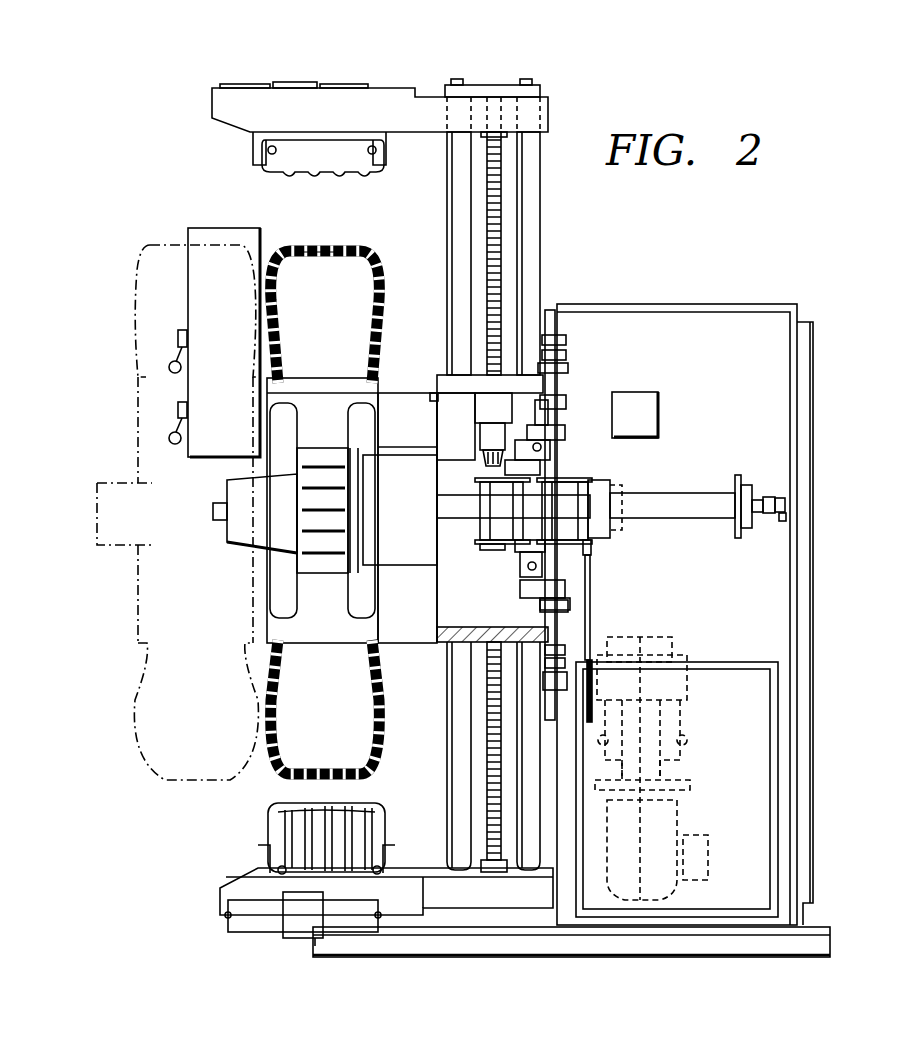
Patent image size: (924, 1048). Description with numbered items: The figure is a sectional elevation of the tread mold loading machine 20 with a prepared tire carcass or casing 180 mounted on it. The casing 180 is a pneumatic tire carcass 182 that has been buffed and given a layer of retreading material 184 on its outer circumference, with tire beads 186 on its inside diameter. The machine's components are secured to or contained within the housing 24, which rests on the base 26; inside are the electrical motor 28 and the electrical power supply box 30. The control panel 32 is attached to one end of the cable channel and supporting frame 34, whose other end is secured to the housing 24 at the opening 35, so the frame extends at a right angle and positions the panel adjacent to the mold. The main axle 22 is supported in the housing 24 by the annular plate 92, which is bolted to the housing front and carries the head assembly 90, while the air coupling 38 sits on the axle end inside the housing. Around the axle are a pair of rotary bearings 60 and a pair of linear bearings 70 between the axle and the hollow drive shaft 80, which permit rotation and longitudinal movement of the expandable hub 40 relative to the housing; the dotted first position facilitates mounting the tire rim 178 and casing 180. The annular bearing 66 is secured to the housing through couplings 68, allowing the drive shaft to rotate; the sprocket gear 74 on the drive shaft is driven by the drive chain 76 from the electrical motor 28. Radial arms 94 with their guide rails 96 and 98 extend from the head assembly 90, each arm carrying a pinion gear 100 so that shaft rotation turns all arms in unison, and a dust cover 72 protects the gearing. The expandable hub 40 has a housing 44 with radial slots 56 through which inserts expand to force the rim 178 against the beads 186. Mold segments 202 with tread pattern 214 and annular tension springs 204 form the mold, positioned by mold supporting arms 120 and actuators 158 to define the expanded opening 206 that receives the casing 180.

The tread mold loading machine 20 is at (590, 482).
The main axle 22 is at (695, 493).
The housing 24 is at (707, 302).
The base 26 is at (830, 940).
The electrical motor 28 is at (676, 820).
The electrical power supply box 30 is at (728, 662).
The control panel 32 is at (188, 236).
The cable channel and supporting frame 34 is at (400, 393).
The opening 35 is at (659, 405).
The air coupling 38 is at (775, 497).
The expandable hub 40 is at (112, 545).
The housing of expandable hub 44 is at (226, 492).
The radial slots 56 is at (325, 470).
The rotary bearings 60 is at (510, 545).
The annular bearing 66 is at (528, 582).
The couplings 68 is at (568, 395).
The linear bearings 70 is at (487, 550).
The dust cover 72 is at (455, 443).
The sprocket gear 74 is at (592, 548).
The drive chain 76 is at (590, 580).
The hollow drive shaft 80 is at (530, 470).
The head assembly 90 is at (440, 643).
The annular plate 92 is at (551, 318).
The radial arms 94 is at (510, 160).
The guide rail 96 is at (447, 205).
The guide rail 98 is at (539, 222).
The pinion gears 100 is at (445, 505).
The mold supporting arms 120 is at (432, 93).
The actuators 158 is at (283, 80).
The tire rim 178 is at (88, 655).
The prepared tire carcass or casing 180 is at (132, 298).
The tire carcass 182 is at (375, 282).
The retreading material 184 is at (310, 245).
The tire beads 186 is at (370, 378).
The mold segments 202 is at (348, 172).
The annular tension springs 204 is at (262, 132).
The expanded opening 206 is at (250, 202).
The tread pattern 214 is at (300, 830).